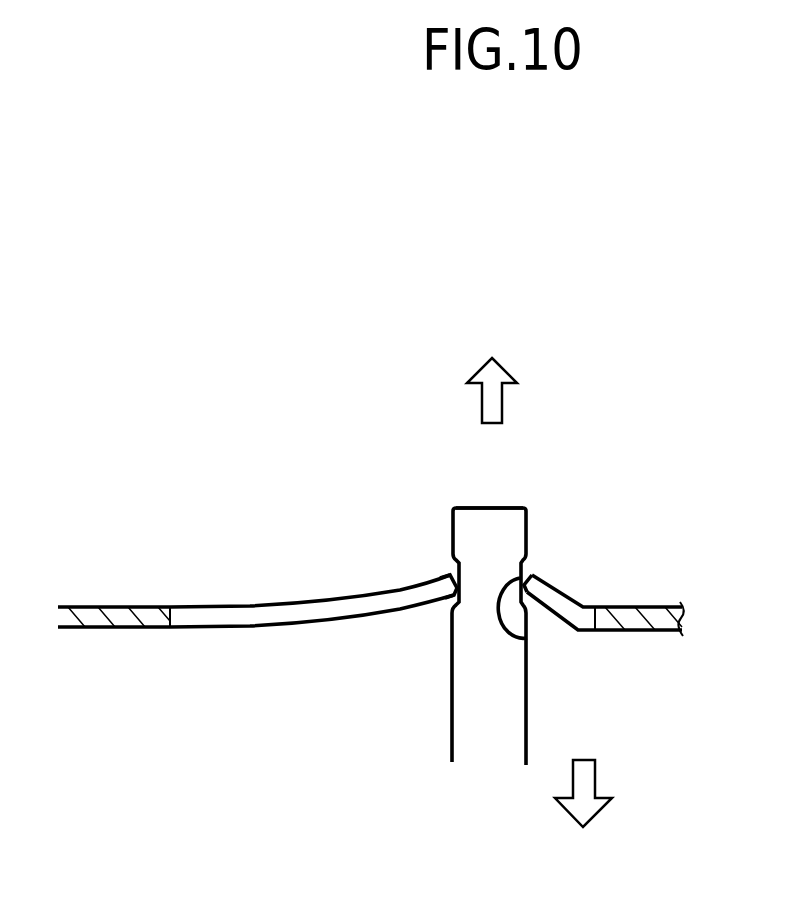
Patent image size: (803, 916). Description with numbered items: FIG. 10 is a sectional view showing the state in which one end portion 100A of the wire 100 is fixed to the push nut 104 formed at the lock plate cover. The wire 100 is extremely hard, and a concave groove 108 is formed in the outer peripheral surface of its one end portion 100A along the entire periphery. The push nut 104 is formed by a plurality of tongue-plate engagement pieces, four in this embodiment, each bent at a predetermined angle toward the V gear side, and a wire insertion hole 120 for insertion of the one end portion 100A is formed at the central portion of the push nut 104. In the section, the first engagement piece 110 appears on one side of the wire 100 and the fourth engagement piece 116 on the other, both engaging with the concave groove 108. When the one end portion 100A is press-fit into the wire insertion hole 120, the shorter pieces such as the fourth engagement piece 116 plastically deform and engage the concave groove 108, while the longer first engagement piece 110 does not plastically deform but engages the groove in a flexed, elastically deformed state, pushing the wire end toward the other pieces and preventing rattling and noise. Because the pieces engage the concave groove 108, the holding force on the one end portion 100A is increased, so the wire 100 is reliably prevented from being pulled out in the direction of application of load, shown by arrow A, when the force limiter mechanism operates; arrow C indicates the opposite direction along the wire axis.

The wire 100 is at (449, 692).
The one end portion of the wire 100A is at (505, 516).
The push nut 104 is at (645, 588).
The concave groove 108 is at (456, 578).
The first engagement piece 110 is at (400, 590).
The fourth engagement piece 116 is at (553, 602).
The wire insertion hole 120 is at (527, 638).
The direction C is at (482, 401).
The direction of application of load A is at (595, 775).